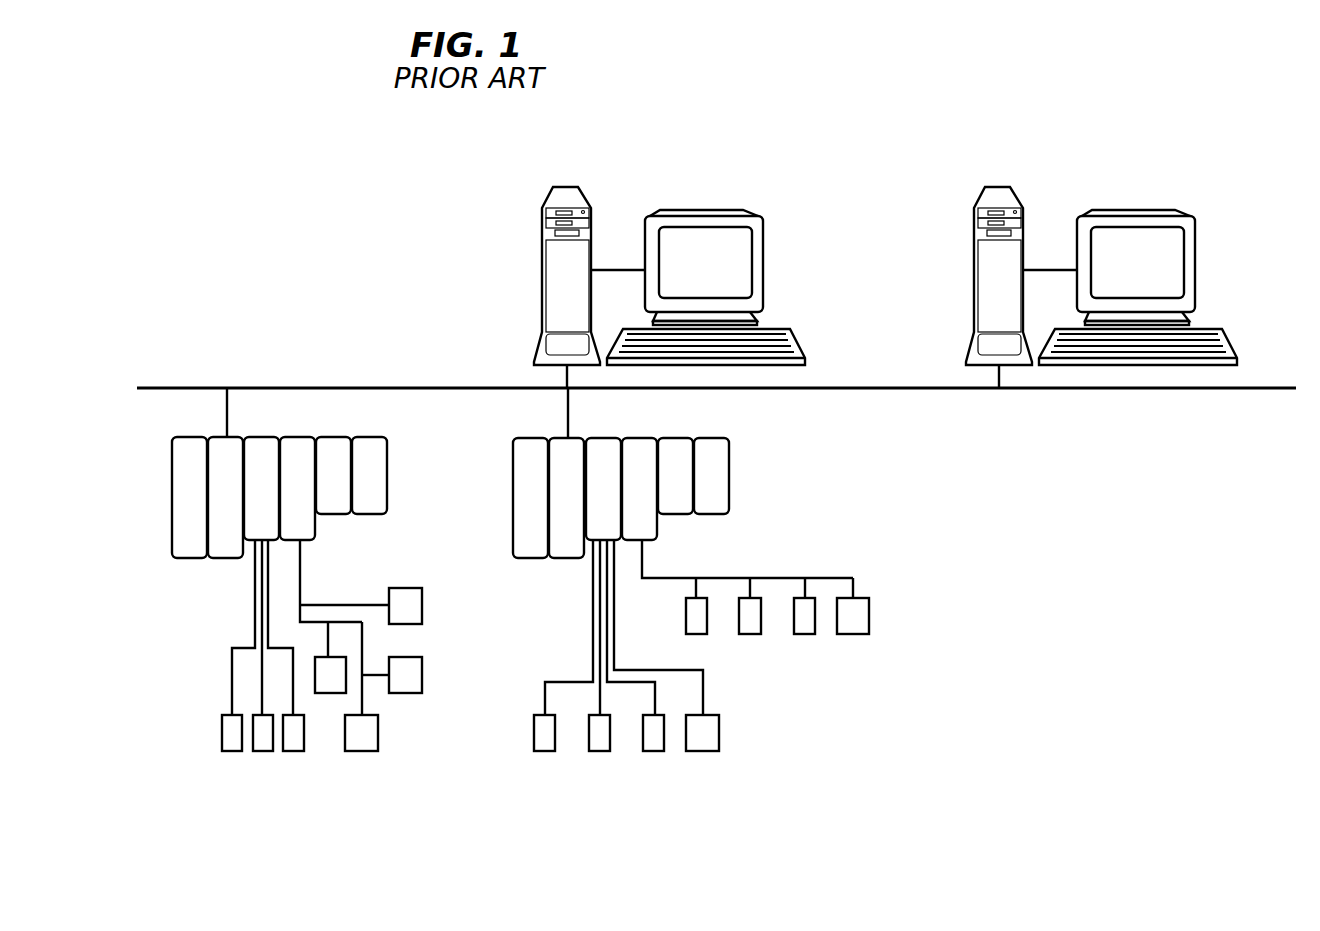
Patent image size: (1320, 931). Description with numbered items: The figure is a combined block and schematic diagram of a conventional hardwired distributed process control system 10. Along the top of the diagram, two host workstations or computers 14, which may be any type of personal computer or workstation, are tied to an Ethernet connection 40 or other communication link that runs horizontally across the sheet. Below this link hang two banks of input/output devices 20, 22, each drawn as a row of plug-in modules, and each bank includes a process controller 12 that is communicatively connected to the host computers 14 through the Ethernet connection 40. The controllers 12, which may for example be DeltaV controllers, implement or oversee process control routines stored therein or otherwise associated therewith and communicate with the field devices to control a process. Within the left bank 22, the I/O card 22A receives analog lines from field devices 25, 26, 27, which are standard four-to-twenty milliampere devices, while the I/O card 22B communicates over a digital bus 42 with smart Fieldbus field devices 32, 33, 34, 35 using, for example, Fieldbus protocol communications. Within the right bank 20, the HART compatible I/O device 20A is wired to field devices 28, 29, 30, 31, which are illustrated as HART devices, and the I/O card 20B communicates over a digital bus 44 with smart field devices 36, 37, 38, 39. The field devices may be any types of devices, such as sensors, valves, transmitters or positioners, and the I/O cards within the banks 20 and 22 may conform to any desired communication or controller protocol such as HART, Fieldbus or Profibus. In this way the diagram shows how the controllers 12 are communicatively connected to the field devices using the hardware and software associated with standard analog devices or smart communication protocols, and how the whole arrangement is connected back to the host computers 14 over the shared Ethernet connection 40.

The hardwired distributed process control system 10 is at (858, 153).
The process controller 12 is at (219, 436).
The host workstation or computer 14 is at (571, 186).
The bank of input/output devices 20 is at (666, 479).
The HART compatible I/O device 20A is at (602, 436).
The I/O card 20B is at (642, 436).
The bank of input/output devices 22 is at (325, 478).
The I/O card 22A is at (261, 436).
The I/O card 22B is at (300, 436).
The field device 25 is at (231, 752).
The field device 26 is at (262, 752).
The field device 27 is at (296, 752).
The field device 28 is at (541, 752).
The field device 29 is at (600, 752).
The field device 30 is at (656, 752).
The field device 31 is at (702, 752).
The field device 32 is at (422, 603).
The field device 33 is at (422, 674).
The field device 34 is at (360, 752).
The field device 35 is at (326, 695).
The field device 36 is at (693, 635).
The field device 37 is at (752, 635).
The field device 38 is at (807, 635).
The field device 39 is at (853, 635).
The Ethernet connection 40 is at (381, 387).
The digital bus 42 is at (303, 584).
The digital bus 44 is at (668, 576).